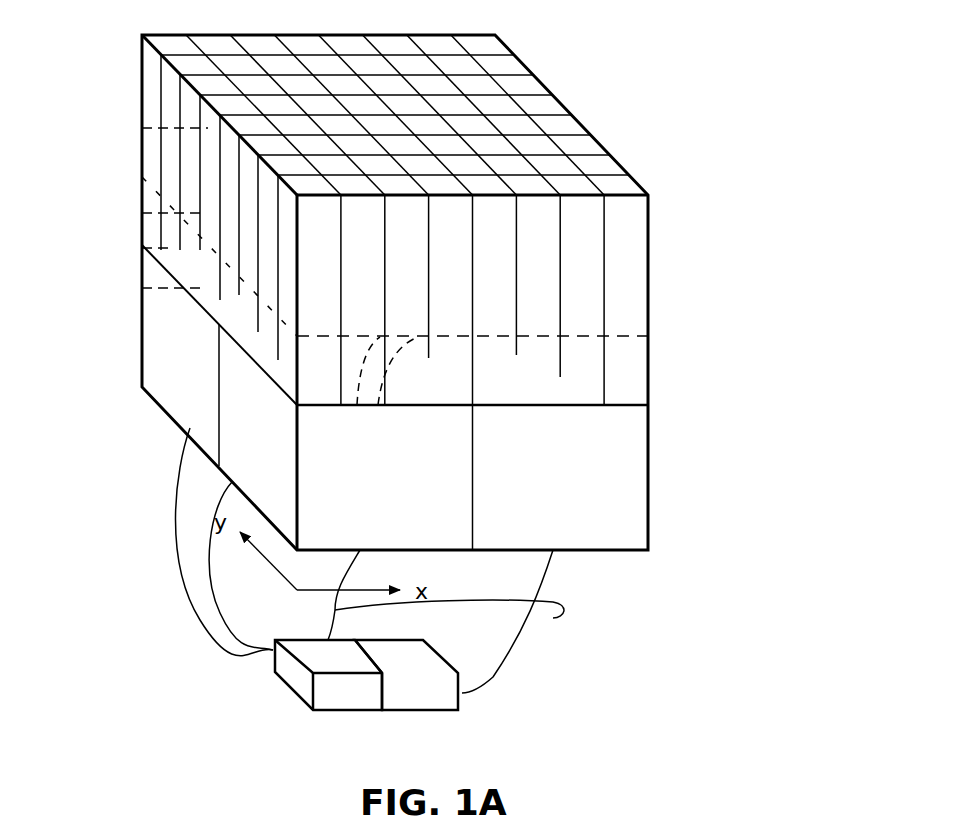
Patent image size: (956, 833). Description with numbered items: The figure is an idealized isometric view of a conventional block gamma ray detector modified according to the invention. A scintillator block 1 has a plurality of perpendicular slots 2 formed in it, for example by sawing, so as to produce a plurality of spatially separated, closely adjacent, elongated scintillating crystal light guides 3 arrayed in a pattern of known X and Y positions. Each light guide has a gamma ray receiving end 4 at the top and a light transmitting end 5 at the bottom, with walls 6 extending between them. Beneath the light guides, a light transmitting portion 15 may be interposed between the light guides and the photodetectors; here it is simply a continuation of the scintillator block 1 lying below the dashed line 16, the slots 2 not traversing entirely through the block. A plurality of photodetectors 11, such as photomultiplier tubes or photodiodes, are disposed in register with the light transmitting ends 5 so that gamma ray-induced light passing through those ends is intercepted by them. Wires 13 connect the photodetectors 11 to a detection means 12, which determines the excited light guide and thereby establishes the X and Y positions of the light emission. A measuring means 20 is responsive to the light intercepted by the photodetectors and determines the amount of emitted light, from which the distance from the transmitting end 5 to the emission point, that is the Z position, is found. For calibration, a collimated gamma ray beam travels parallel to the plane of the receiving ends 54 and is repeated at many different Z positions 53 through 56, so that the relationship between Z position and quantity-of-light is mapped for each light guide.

The scintillator block 1 is at (662, 252).
The slots 2 is at (383, 302).
The light guides 3 is at (437, 89).
The gamma ray receiving end 4 is at (258, 46).
The light transmitting end 5 is at (363, 407).
The walls 6 is at (152, 77).
The photodetectors 11 is at (200, 358).
The detection means 12 is at (437, 698).
The wires 13 is at (228, 608).
The light transmitting portion 15 is at (643, 385).
The dashed line 16 is at (660, 334).
The measuring means 20 is at (358, 698).
The Z position 53 is at (134, 288).
The receiving ends plane 54 is at (134, 128).
The Z position 56 is at (136, 247).